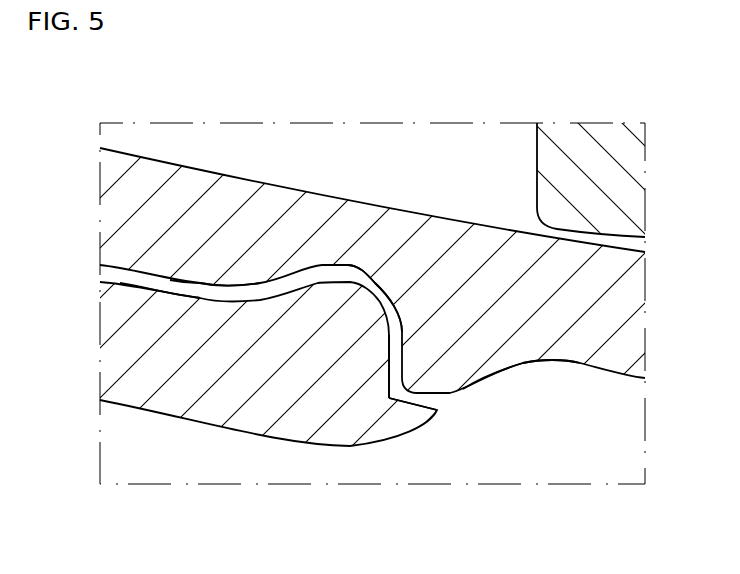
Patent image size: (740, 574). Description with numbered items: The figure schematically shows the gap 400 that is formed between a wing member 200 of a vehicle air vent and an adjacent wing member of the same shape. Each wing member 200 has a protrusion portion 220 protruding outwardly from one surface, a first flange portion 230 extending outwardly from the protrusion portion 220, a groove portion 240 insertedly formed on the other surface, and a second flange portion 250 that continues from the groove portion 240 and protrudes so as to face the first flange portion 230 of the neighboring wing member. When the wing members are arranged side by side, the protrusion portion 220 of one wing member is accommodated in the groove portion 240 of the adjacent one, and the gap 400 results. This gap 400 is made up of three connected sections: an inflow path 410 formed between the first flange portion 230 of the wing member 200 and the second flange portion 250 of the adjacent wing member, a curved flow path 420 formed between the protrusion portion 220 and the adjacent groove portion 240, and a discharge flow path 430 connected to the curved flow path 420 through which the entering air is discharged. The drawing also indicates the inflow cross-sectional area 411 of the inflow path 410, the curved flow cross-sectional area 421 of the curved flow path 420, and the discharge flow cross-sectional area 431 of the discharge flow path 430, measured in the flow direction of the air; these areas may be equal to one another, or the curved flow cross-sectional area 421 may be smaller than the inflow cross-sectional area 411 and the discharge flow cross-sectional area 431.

The wing member 200 is at (140, 356).
The protrusion portion 220 is at (330, 285).
The first flange portion 230 is at (412, 418).
The groove portion 240 is at (333, 265).
The second flange portion 250 is at (450, 397).
The gap 400 is at (392, 368).
The inflow path 410 is at (399, 392).
The inflow cross-sectional area 411 is at (483, 350).
The curved flow path 420 is at (234, 304).
The curved flow cross-sectional area 421 is at (393, 240).
The discharge flow path 430 is at (127, 283).
The discharge flow cross-sectional area 431 is at (247, 247).